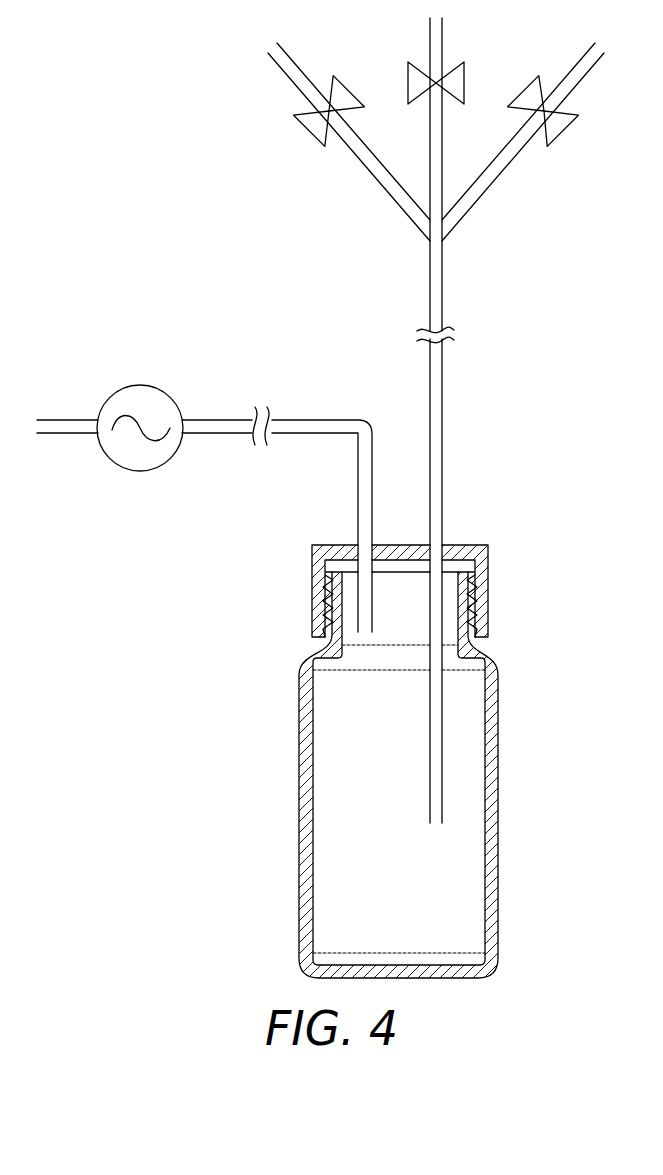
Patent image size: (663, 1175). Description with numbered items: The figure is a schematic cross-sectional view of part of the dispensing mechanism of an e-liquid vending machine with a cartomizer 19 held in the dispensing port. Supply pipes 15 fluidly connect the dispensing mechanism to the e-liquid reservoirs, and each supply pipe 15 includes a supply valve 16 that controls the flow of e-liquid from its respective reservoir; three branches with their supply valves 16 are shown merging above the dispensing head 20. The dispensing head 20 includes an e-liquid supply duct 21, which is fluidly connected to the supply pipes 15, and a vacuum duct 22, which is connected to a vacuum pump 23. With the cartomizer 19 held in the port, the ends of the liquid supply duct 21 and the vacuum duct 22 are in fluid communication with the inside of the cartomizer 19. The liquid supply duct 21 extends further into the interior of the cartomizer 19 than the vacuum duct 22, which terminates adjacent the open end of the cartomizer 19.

The supply pipe 15 is at (378, 182).
The supply valve 16 is at (406, 67).
The cartomizer 19 is at (498, 912).
The dispensing head 20 is at (490, 556).
The e-liquid supply duct 21 is at (423, 793).
The vacuum duct 22 is at (357, 602).
The vacuum pump 23 is at (140, 384).